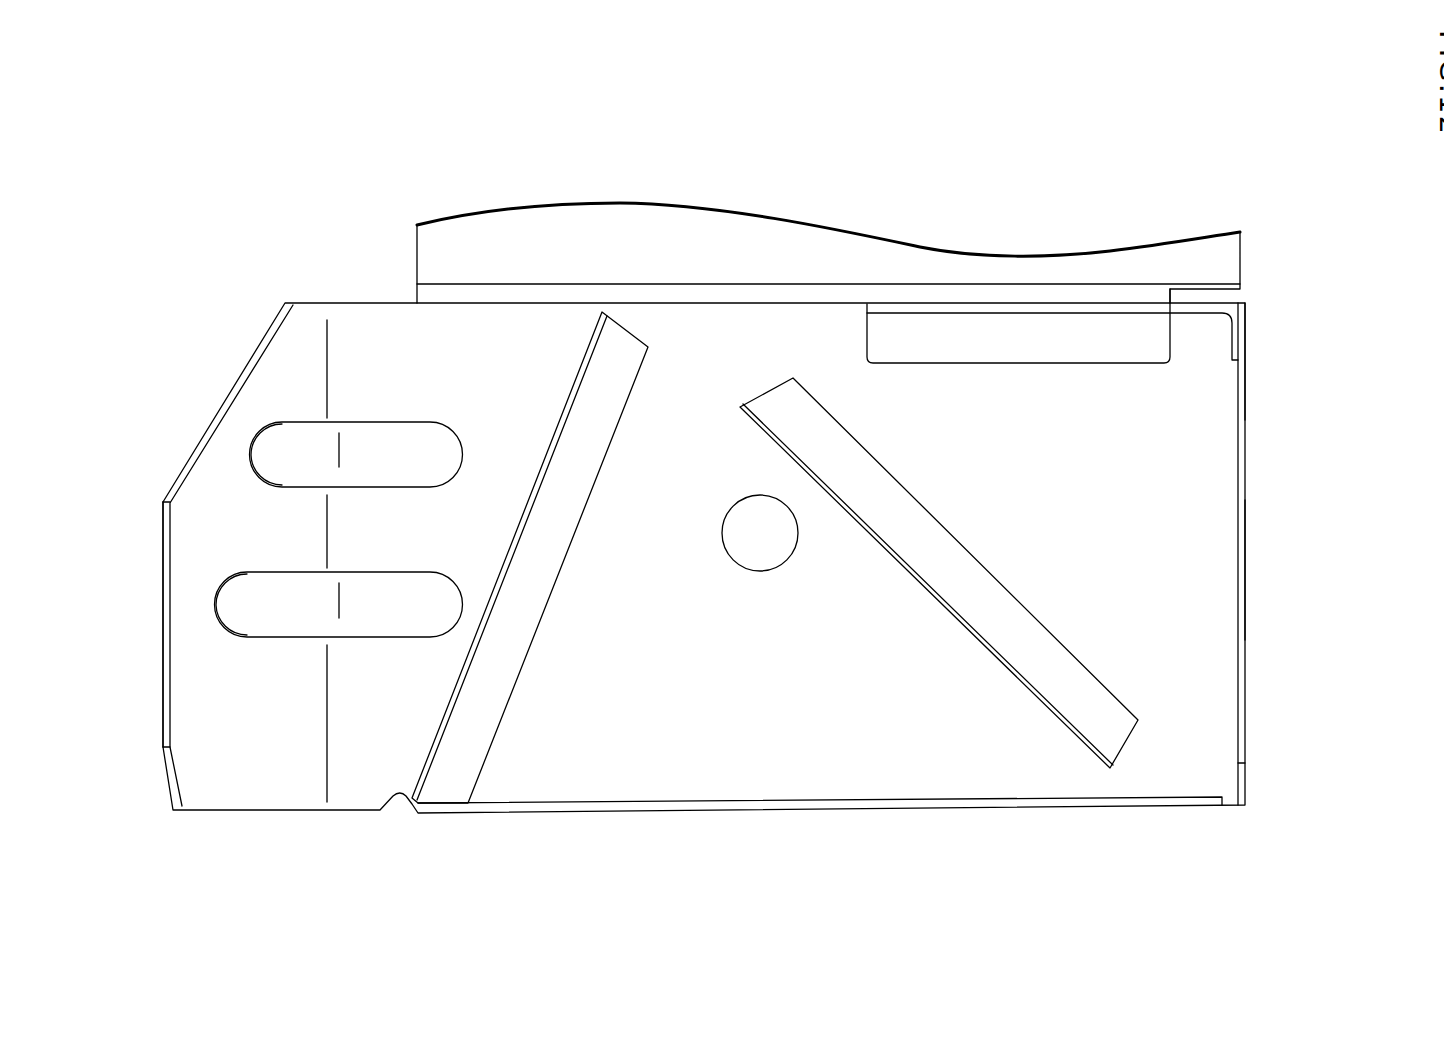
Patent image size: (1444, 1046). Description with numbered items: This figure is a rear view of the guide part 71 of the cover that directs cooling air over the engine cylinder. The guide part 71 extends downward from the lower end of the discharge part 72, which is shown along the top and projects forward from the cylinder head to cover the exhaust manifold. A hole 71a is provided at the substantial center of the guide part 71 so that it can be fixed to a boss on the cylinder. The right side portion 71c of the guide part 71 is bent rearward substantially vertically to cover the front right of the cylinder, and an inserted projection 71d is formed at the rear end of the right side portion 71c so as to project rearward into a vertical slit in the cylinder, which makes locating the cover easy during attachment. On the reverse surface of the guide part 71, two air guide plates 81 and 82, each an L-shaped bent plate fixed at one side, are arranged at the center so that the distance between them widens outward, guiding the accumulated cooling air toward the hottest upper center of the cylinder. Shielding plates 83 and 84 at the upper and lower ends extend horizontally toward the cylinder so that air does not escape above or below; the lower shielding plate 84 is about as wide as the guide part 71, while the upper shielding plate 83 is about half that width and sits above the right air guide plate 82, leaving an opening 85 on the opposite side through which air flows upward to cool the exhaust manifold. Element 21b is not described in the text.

The guide part 71 is at (378, 302).
The hole 71a is at (762, 572).
The right side portion 71c is at (1248, 390).
The inserted projection 71d is at (1245, 573).
The discharge part 72 is at (1240, 258).
The air guide plate 81 is at (573, 380).
The air guide plate 82 is at (937, 603).
The upper shielding plate 83 is at (1035, 313).
The lower shielding plate 84 is at (695, 815).
The opening 85 is at (677, 303).
The left end wall 21b is at (162, 623).